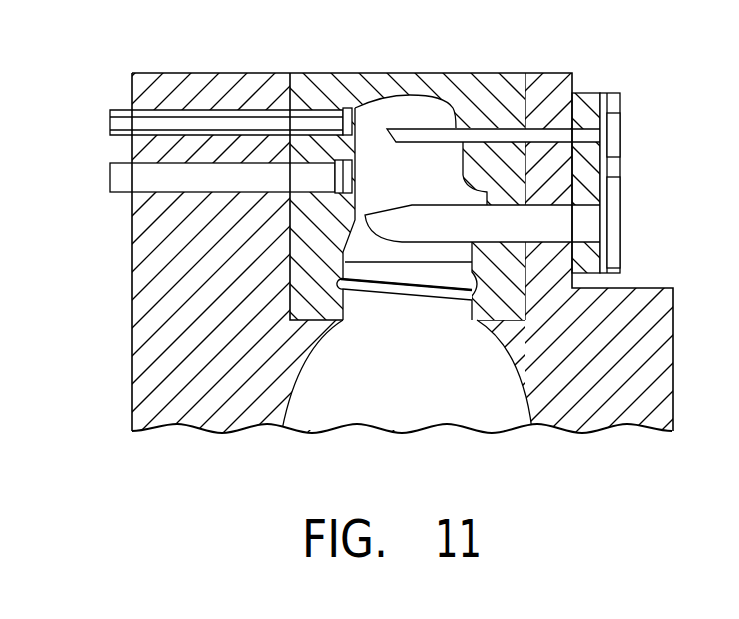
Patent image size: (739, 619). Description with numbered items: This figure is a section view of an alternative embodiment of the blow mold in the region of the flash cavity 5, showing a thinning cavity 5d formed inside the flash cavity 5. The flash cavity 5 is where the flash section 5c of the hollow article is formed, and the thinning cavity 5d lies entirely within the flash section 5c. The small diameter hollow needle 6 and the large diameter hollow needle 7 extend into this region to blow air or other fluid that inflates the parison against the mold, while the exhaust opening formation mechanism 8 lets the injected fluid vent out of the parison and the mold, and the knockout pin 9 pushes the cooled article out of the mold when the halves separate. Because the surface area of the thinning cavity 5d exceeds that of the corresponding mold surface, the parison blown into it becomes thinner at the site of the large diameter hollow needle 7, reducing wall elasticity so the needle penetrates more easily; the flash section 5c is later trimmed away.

The flash cavity 5 is at (438, 155).
The flash section 5c is at (367, 118).
The thinning cavity 5d is at (487, 198).
The small diameter hollow needle 6 is at (533, 135).
The large diameter hollow needle 7 is at (557, 227).
The exhaust opening formation mechanism 8 is at (110, 121).
The knockout pin 9 is at (107, 177).